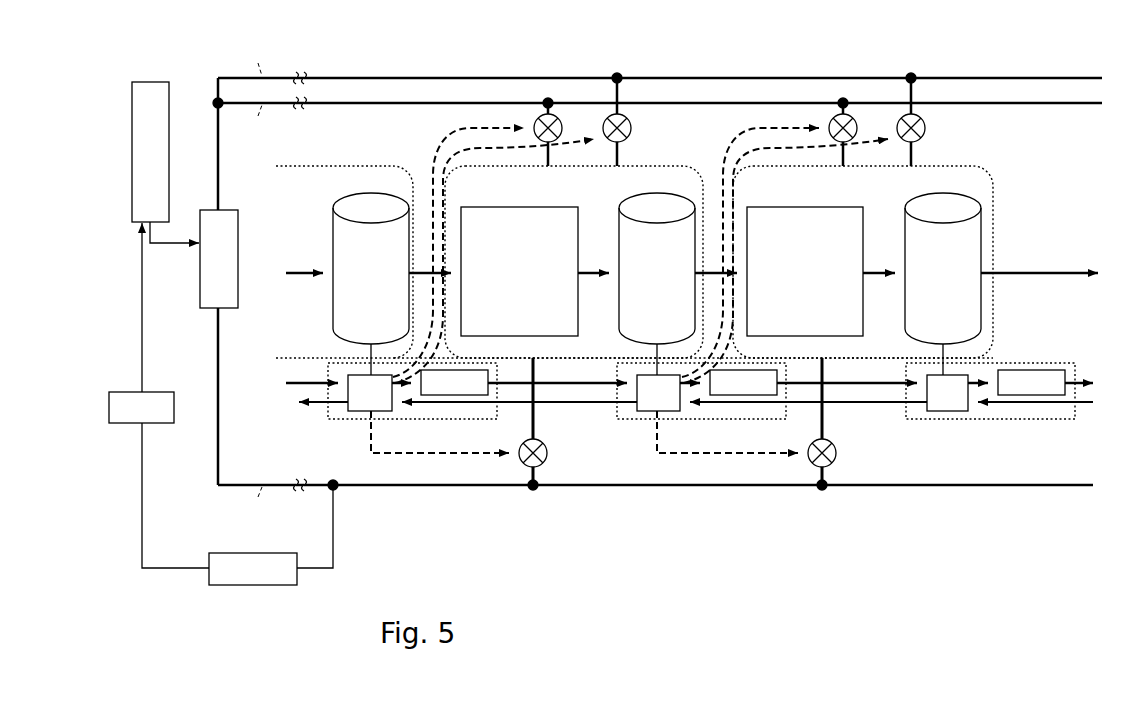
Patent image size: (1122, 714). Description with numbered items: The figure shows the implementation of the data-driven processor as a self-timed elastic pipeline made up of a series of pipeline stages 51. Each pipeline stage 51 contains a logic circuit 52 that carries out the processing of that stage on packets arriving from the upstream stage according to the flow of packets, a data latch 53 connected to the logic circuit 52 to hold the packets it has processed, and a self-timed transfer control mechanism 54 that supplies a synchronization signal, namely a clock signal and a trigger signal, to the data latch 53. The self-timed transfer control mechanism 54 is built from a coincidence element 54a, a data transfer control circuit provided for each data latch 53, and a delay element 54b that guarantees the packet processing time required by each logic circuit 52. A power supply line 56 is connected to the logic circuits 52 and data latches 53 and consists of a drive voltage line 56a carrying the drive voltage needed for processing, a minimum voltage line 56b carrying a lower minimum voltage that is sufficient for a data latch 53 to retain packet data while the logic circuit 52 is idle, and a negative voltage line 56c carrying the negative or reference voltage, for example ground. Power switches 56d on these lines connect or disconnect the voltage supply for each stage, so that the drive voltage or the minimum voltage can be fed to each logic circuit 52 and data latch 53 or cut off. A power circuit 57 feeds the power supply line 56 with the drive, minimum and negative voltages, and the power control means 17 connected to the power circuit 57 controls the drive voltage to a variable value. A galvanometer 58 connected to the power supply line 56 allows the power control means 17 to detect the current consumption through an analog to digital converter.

The power control means 17 is at (159, 314).
The pipeline stage 51 is at (687, 253).
The logic circuit 52 is at (536, 206).
The data latch 53 is at (347, 204).
The self-timed transfer control mechanism 54 is at (679, 292).
The coincidence element 54a is at (357, 412).
The delay element 54b is at (489, 371).
The power supply line 56 is at (648, 267).
The drive voltage line 56a is at (428, 77).
The minimum voltage line 56b is at (395, 100).
The negative voltage line 56c is at (358, 487).
The power switch 56d is at (558, 117).
The power circuit 57 is at (232, 259).
The galvanometer 58 is at (271, 536).